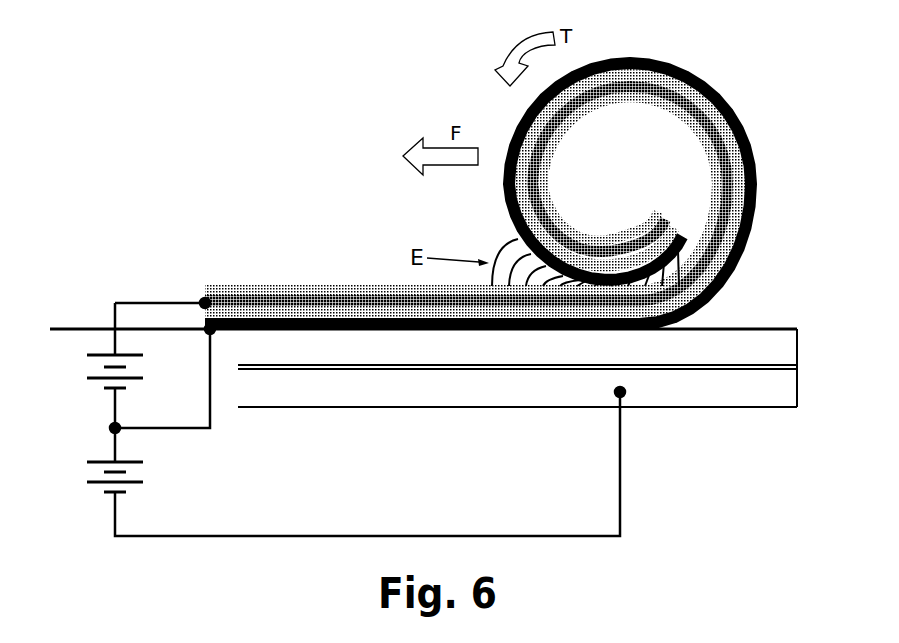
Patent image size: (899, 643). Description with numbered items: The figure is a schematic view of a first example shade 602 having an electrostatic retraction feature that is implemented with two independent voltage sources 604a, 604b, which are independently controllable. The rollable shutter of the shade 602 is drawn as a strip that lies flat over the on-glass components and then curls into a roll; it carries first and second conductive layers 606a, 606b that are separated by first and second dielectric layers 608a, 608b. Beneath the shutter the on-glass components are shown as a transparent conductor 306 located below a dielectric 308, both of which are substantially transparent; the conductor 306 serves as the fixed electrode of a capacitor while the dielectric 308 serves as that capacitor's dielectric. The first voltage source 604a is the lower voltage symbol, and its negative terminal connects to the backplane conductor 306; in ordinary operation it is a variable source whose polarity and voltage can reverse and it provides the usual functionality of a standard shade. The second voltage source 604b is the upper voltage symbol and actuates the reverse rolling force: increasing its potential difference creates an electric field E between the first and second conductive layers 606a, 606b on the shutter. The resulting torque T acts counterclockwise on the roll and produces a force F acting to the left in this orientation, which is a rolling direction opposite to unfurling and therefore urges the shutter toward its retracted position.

The first example shade 602 is at (532, 193).
The first conductive layer 606a is at (690, 243).
The second conductive layer 606b is at (683, 237).
The first dielectric layer 608a is at (712, 112).
The second dielectric layer 608b is at (707, 150).
The dielectric material 308 is at (797, 331).
The transparent conductor 306 is at (795, 382).
The first voltage source 604a is at (168, 478).
The second voltage source 604b is at (90, 408).